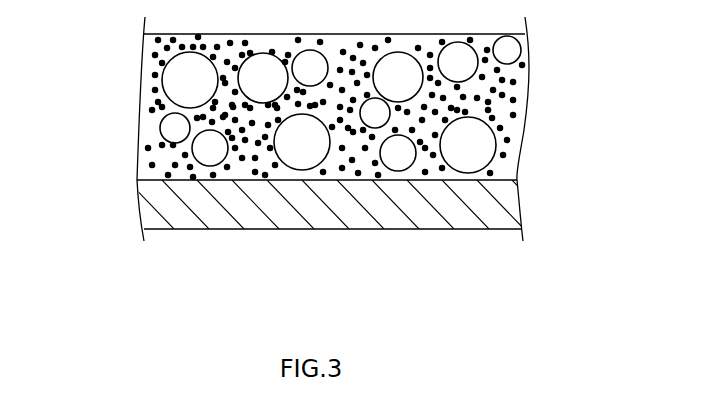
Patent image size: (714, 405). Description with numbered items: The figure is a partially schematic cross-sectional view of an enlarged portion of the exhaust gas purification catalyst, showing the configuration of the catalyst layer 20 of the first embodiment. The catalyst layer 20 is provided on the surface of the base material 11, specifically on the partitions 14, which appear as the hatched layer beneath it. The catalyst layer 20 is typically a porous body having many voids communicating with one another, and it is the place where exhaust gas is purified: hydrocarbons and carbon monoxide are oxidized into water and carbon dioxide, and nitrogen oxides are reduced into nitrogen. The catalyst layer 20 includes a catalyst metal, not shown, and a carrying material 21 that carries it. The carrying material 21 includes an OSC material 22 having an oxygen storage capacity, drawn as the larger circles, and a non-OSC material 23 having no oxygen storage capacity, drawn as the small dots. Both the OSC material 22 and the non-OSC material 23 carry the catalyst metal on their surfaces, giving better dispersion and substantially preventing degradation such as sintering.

The base material 11 is at (306, 217).
The partitions 14 is at (143, 208).
The catalyst layer 20 is at (362, 107).
The carrying material 21 is at (573, 70).
The OSC material 22 is at (512, 53).
The non-OSC material 23 is at (515, 82).